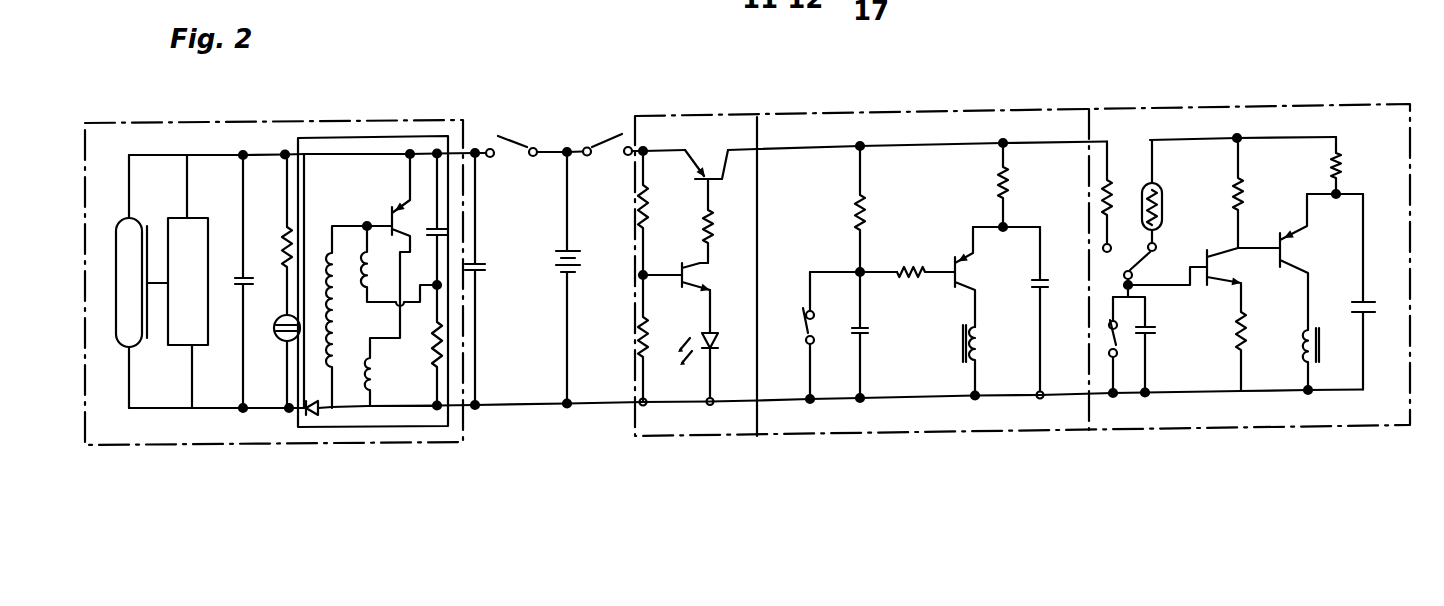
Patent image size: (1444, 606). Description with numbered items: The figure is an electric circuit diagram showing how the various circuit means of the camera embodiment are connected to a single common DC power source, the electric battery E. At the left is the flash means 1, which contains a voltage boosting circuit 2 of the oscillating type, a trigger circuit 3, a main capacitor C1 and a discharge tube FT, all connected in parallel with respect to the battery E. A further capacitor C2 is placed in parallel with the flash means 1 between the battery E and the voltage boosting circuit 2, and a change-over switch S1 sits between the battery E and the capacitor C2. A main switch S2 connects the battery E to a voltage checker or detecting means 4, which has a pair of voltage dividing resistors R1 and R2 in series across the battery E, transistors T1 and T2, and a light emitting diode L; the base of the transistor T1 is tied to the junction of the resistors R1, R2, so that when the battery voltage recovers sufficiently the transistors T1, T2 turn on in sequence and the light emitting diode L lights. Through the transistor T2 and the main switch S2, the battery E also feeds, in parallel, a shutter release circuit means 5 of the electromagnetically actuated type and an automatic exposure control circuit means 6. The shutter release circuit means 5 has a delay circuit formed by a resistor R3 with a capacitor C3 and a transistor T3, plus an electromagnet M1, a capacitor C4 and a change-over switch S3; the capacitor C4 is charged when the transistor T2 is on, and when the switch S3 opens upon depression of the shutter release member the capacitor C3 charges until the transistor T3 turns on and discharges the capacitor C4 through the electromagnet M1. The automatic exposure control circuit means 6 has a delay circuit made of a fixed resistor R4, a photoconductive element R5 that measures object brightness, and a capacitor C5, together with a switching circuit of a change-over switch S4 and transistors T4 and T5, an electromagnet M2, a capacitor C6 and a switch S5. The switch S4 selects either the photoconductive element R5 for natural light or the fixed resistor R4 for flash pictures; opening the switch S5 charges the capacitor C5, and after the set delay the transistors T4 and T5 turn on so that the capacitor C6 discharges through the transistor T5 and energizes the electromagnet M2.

The flash means 1 is at (253, 121).
The voltage boosting circuit 2 is at (372, 137).
The trigger circuit 3 is at (198, 224).
The voltage checker (detecting means) 4 is at (634, 413).
The shutter release circuit means 5 is at (970, 110).
The automatic exposure control circuit means 6 is at (1290, 104).
The discharge tube FT is at (128, 281).
The main capacitor C1 is at (237, 280).
The capacitor C2 is at (488, 275).
The capacitor C3 is at (868, 337).
The capacitor C4 is at (1020, 309).
The capacitor C5 is at (1149, 328).
The capacitor C6 is at (1376, 312).
The change-over switch S1 is at (520, 135).
The main switch (main change-over switch) S2 is at (606, 131).
The change-over switch S3 is at (790, 335).
The change-over switch S4 is at (1133, 256).
The switch S5 is at (1108, 343).
The DC power source (electric battery) E is at (556, 258).
The voltage dividing resistor R1 is at (636, 205).
The voltage dividing resistor R2 is at (637, 332).
The resistor R3 is at (868, 218).
The fixed resistor R4 is at (1102, 198).
The photoconductive element R5 is at (1161, 212).
The transistor T1 is at (702, 260).
The transistor T2 is at (702, 171).
The transistor T3 is at (959, 257).
The transistor T4 is at (1225, 250).
The transistor T5 is at (1292, 240).
The light emitting diode L is at (737, 342).
The electromagnet M1 is at (962, 345).
The electromagnet M2 is at (1291, 359).